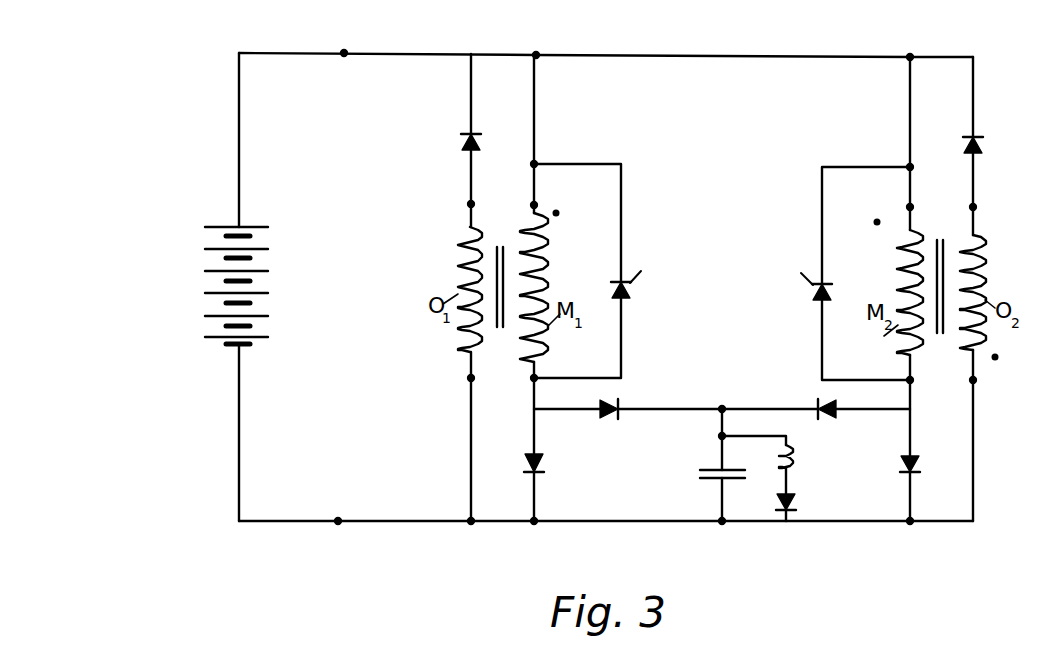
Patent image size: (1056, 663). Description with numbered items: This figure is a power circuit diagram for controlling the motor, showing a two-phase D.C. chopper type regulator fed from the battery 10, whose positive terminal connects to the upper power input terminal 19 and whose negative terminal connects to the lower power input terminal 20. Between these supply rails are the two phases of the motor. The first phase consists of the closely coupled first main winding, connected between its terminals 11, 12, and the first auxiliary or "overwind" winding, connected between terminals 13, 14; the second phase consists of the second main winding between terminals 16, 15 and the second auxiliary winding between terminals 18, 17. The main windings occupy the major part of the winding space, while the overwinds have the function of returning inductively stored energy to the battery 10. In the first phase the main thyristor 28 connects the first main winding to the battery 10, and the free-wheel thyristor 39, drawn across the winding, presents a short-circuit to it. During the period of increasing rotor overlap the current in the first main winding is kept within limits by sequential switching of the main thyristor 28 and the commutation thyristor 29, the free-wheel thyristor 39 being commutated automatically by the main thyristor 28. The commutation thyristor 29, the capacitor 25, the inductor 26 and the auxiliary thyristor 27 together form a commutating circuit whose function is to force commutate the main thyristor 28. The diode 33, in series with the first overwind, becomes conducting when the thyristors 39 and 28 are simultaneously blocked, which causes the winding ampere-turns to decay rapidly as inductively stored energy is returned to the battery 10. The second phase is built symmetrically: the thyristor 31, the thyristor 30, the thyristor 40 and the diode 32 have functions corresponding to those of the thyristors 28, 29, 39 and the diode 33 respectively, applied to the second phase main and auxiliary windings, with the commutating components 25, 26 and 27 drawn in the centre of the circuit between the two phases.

The battery 10 is at (205, 285).
The output terminal 11 is at (534, 205).
The output terminal 12 is at (534, 378).
The output terminal 13 is at (468, 204).
The output terminal 14 is at (468, 378).
The output terminal 15 is at (894, 392).
The output terminal 16 is at (908, 207).
The output terminal 17 is at (973, 380).
The terminal 18 is at (975, 207).
The power input terminal 19 is at (344, 53).
The power input terminal 20 is at (338, 521).
The capacitor 25 is at (714, 461).
The inductor 26 is at (794, 461).
The auxiliary thyristor 27 is at (800, 498).
The main thyristor 28 is at (548, 460).
The commutation thyristor 29 is at (610, 417).
The thyristor 30 is at (828, 417).
The thyristor 31 is at (924, 462).
The diode 32 is at (985, 148).
The diode 33 is at (460, 142).
The free-wheel thyristor 39 is at (634, 278).
The thyristor 40 is at (808, 280).